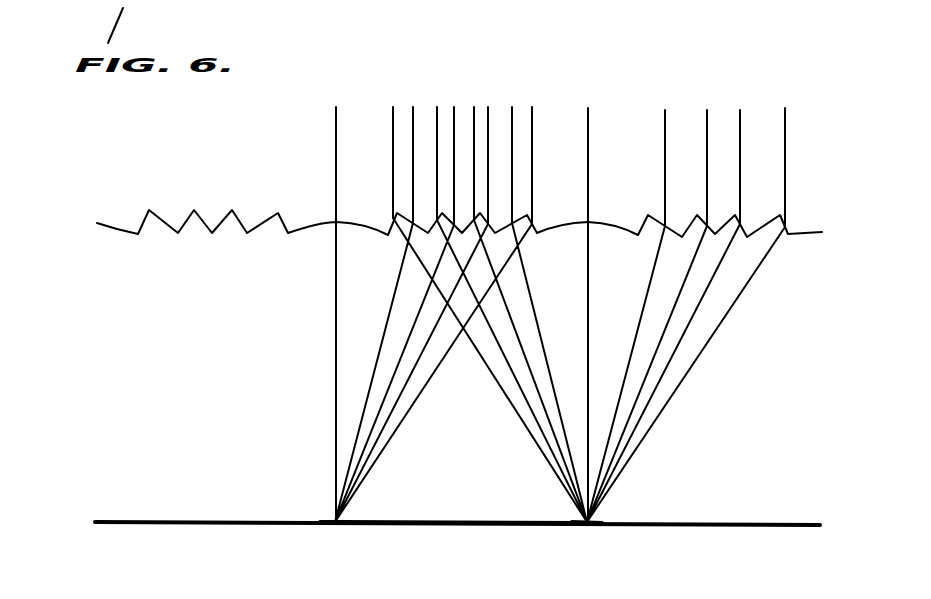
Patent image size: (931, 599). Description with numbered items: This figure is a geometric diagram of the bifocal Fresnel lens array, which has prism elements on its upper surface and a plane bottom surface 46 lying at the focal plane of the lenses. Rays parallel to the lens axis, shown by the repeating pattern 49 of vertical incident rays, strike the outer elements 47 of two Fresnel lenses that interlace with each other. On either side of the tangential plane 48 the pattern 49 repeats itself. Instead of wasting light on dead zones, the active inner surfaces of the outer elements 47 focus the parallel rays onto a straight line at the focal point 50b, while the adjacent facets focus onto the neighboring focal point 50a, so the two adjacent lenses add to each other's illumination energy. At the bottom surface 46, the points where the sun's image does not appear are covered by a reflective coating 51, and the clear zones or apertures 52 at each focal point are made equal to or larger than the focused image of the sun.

The bottom surface 46 is at (172, 520).
The outer elements 47 is at (468, 228).
The tangential plane 48 is at (590, 120).
The pattern 49 is at (518, 198).
The focal point 50a is at (588, 522).
The focal point 50b is at (336, 521).
The reflective coating 51 is at (470, 527).
The clear zones or apertures 52 is at (336, 527).